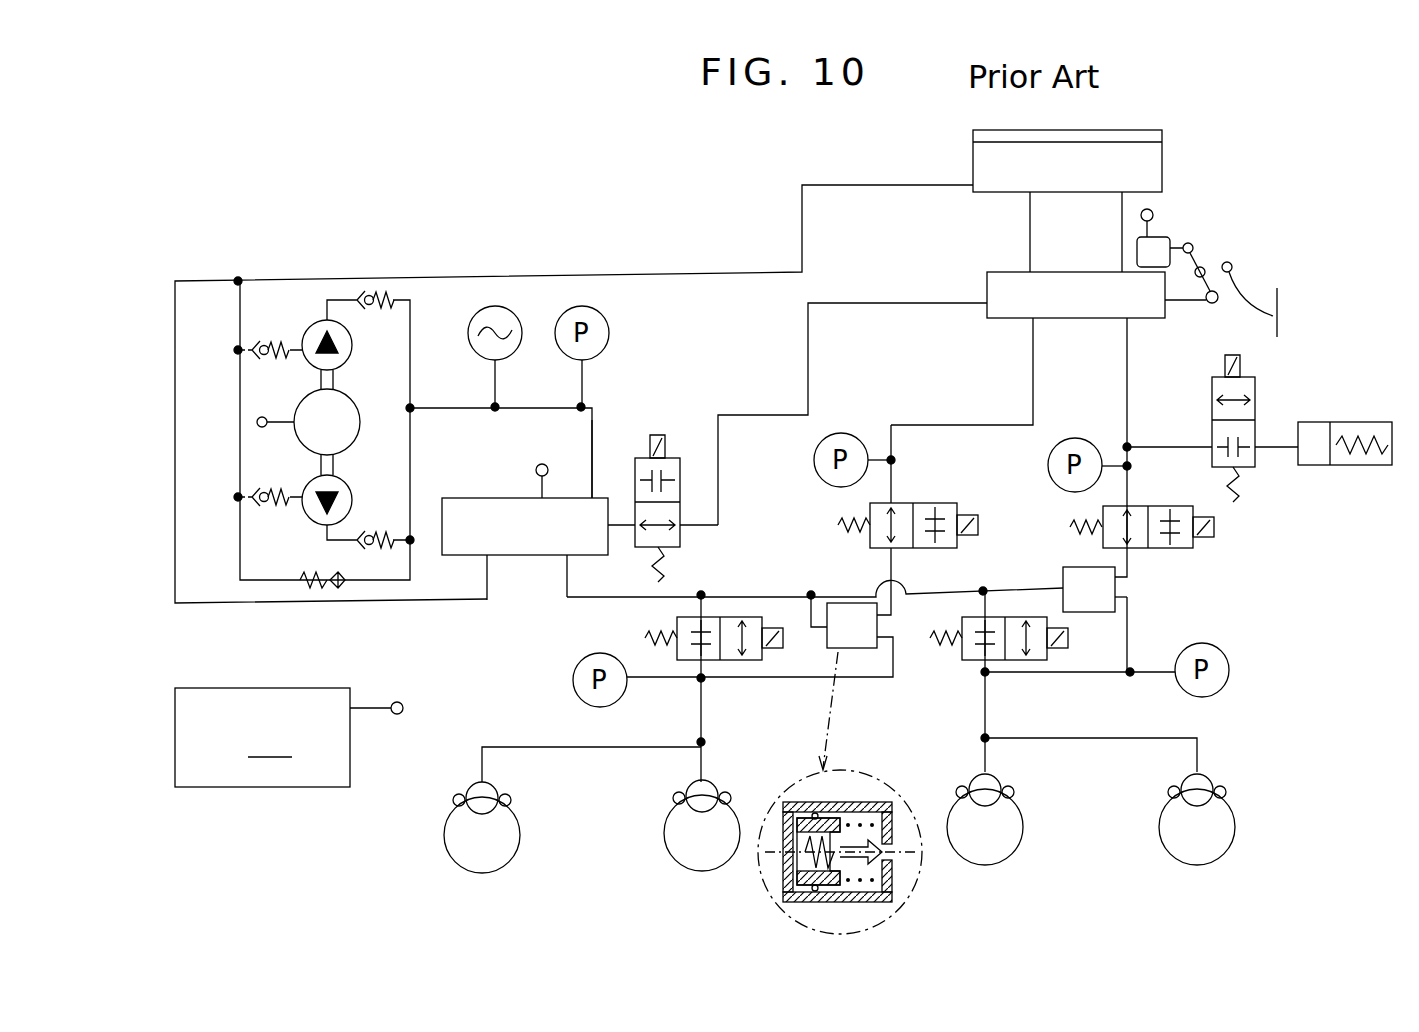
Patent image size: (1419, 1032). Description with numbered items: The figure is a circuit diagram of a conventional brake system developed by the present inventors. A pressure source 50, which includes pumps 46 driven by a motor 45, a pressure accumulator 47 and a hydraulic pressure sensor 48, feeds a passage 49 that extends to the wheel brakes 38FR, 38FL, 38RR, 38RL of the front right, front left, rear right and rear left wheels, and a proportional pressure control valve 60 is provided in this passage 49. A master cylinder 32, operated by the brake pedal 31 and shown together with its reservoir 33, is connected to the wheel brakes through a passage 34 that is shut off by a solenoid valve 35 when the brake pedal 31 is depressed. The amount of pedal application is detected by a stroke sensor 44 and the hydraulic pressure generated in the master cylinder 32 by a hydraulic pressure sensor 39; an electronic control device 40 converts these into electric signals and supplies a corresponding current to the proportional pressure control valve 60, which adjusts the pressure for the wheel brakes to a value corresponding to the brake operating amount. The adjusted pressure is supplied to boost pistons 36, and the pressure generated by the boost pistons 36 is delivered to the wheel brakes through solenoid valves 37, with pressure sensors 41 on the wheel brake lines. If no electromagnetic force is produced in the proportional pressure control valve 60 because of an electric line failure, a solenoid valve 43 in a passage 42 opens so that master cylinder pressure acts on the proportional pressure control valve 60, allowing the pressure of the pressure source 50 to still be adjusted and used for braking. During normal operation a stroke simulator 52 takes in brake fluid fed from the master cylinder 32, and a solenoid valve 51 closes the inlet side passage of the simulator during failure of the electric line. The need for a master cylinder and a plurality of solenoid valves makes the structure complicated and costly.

The brake pedal 31 is at (1283, 294).
The master cylinder 32 is at (1083, 320).
The reservoir 33 is at (1155, 165).
The passage 34 is at (1127, 390).
The solenoid valve 35 is at (925, 500).
The boost pistons 36 is at (845, 650).
The pressure reducing solenoid valve 37 is at (675, 622).
The rear right wheel brake 38RR is at (480, 860).
The front left wheel brake 38FL is at (703, 860).
The rear left wheel brake 38RL is at (985, 850).
The front right wheel brake 38FR is at (1197, 843).
The hydraulic pressure sensor 39 is at (814, 460).
The electronic control device 40 is at (289, 737).
The wheel cylinder pressure sensor 41 is at (573, 680).
The passage 42 is at (755, 413).
The solenoid valve 43 is at (670, 448).
The stroke sensor 44 is at (1165, 238).
The motor 45 is at (360, 432).
The pumps 46 is at (357, 345).
The pressure accumulator 47 is at (482, 363).
The hydraulic pressure sensor 48 is at (610, 335).
The passage 49 is at (597, 425).
The pressure source 50 is at (592, 268).
The solenoid valve 51 is at (1255, 467).
The stroke simulator 52 is at (1368, 465).
The proportional pressure control valve 60 is at (543, 557).